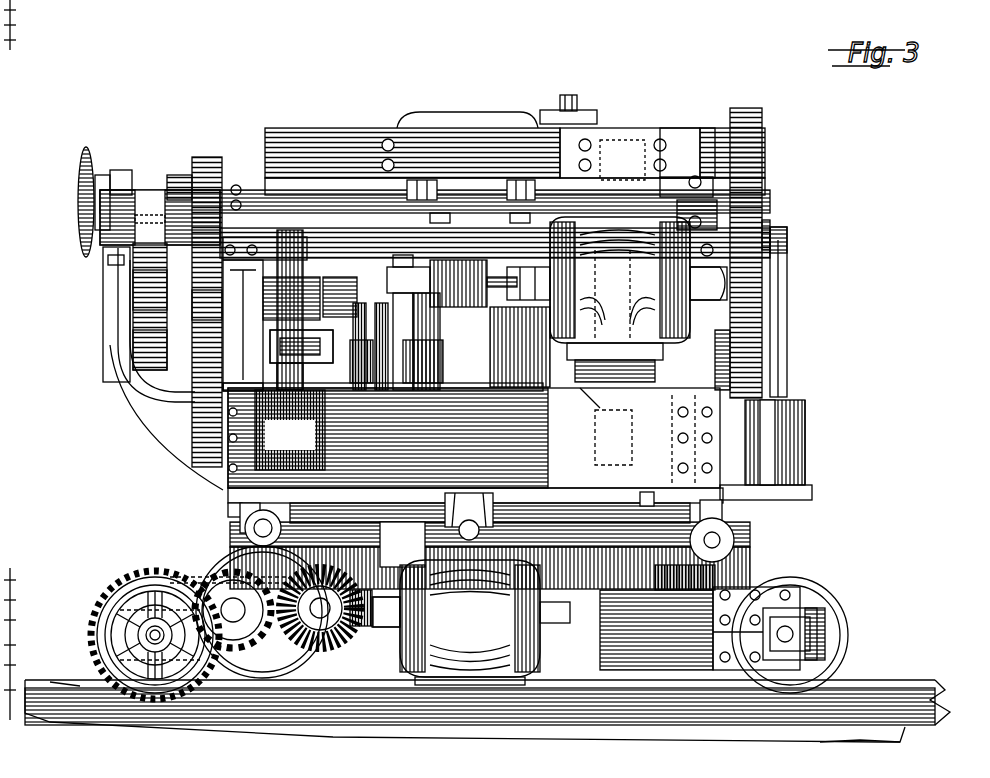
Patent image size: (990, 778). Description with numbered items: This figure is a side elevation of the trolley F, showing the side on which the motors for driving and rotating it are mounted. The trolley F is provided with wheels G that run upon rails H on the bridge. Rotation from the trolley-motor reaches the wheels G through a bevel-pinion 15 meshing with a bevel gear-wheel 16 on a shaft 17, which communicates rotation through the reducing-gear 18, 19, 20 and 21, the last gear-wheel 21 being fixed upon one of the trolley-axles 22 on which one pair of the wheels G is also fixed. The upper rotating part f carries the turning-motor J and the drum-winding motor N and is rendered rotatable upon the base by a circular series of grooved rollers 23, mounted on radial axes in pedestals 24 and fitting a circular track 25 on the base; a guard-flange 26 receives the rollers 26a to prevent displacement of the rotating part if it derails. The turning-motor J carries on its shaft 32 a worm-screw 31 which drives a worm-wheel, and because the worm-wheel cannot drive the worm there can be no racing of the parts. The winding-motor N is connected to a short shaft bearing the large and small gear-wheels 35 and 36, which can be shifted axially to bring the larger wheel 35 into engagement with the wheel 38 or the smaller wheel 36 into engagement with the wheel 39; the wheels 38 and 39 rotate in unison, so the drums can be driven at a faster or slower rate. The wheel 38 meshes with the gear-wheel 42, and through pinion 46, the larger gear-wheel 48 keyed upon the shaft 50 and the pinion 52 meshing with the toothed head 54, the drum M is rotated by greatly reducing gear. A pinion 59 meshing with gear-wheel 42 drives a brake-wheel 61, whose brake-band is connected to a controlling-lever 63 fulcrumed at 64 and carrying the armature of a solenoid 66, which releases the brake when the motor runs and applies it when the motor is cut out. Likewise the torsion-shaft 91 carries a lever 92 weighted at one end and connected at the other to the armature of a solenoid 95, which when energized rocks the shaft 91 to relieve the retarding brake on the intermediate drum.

The bevel-pinion 15 is at (363, 627).
The bevel gear-wheel 16 is at (345, 630).
The shaft 17 is at (320, 612).
The reducing-gear 18 is at (300, 650).
The reducing-gear 19 is at (272, 625).
The reducing-gear 20 is at (238, 612).
The gear-wheel 21 is at (200, 640).
The trolley-axle 22 is at (155, 637).
The grooved rollers 23 is at (245, 530).
The pedestals 24 is at (230, 517).
The circular track 25 is at (712, 578).
The guard-flange 26 is at (436, 530).
The rollers 26a is at (650, 500).
The worm-screw 31 is at (392, 272).
The shaft 32 is at (498, 270).
The gear-wheel 35 is at (214, 149).
The gear-wheel 36 is at (178, 175).
The wheel 38 is at (265, 302).
The wheel 39 is at (150, 288).
The gear-wheel 42 is at (285, 352).
The pinion 46 is at (748, 360).
The gear-wheel 48 is at (748, 292).
The shaft 50 is at (766, 214).
The pinion 52 is at (672, 172).
The gear-wheel 54 is at (773, 437).
The pinion 59 is at (215, 332).
The brake-wheel 61 is at (245, 342).
The controlling-lever 63 is at (300, 385).
The fulcrum 64 is at (260, 385).
The solenoid 66 is at (290, 430).
The torsion-shaft 91 is at (787, 236).
The lever 92 is at (787, 246).
The solenoid 95 is at (806, 410).
The rail A is at (487, 718).
The trolley F is at (700, 628).
The wheels G is at (108, 602).
The rails H is at (912, 686).
The turning-motor J is at (620, 299).
The drum M is at (606, 426).
The drum-winding motor N is at (445, 128).
The upper rotating part f is at (474, 438).